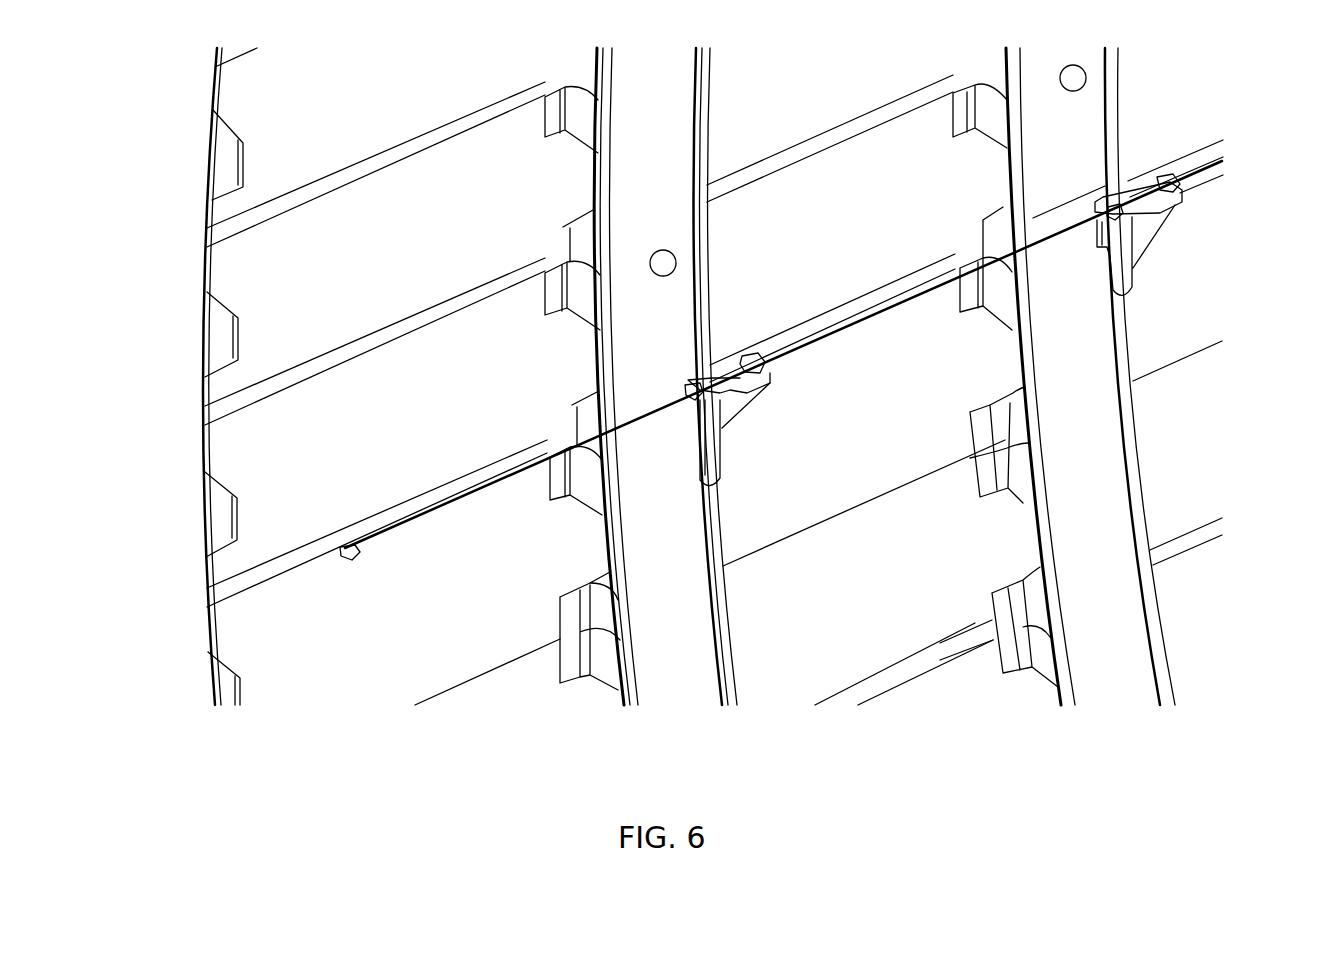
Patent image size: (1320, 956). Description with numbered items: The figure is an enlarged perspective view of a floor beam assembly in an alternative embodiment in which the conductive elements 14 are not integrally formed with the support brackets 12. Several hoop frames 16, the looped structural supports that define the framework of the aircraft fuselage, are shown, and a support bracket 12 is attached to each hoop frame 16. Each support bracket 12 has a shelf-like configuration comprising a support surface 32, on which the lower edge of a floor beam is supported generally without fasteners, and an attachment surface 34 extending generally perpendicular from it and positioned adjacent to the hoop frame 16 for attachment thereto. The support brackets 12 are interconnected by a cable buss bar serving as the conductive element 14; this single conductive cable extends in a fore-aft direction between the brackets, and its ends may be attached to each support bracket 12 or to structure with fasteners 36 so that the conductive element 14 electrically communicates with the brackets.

The support bracket 12 is at (778, 371).
The conductive element 14 is at (480, 490).
The hoop frame 16 is at (680, 660).
The support surface 32 is at (735, 385).
The attachment surface 34 is at (718, 470).
The fastener 36 is at (690, 400).